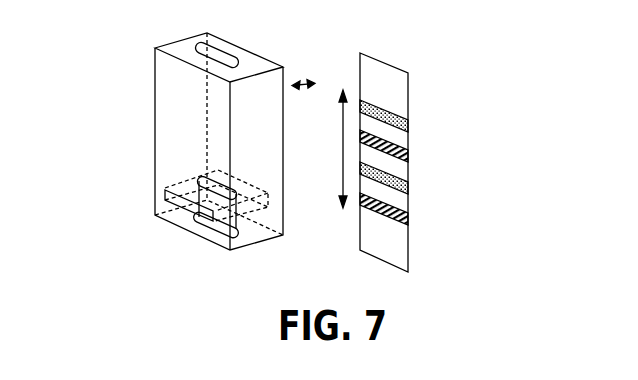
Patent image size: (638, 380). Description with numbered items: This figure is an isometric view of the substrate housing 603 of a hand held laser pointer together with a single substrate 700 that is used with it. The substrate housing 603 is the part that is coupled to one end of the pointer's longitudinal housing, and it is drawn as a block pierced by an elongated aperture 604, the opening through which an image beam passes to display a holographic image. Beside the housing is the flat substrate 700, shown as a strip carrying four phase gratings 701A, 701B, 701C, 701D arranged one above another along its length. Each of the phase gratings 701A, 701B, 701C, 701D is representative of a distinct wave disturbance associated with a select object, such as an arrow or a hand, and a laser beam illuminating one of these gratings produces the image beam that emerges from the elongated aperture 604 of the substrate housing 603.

The substrate housing 603 is at (155, 88).
The elongated aperture 604 is at (165, 190).
The substrate 700 is at (377, 58).
The phase grating 701A is at (408, 123).
The phase grating 701B is at (408, 157).
The phase grating 701C is at (408, 192).
The phase grating 701D is at (408, 222).